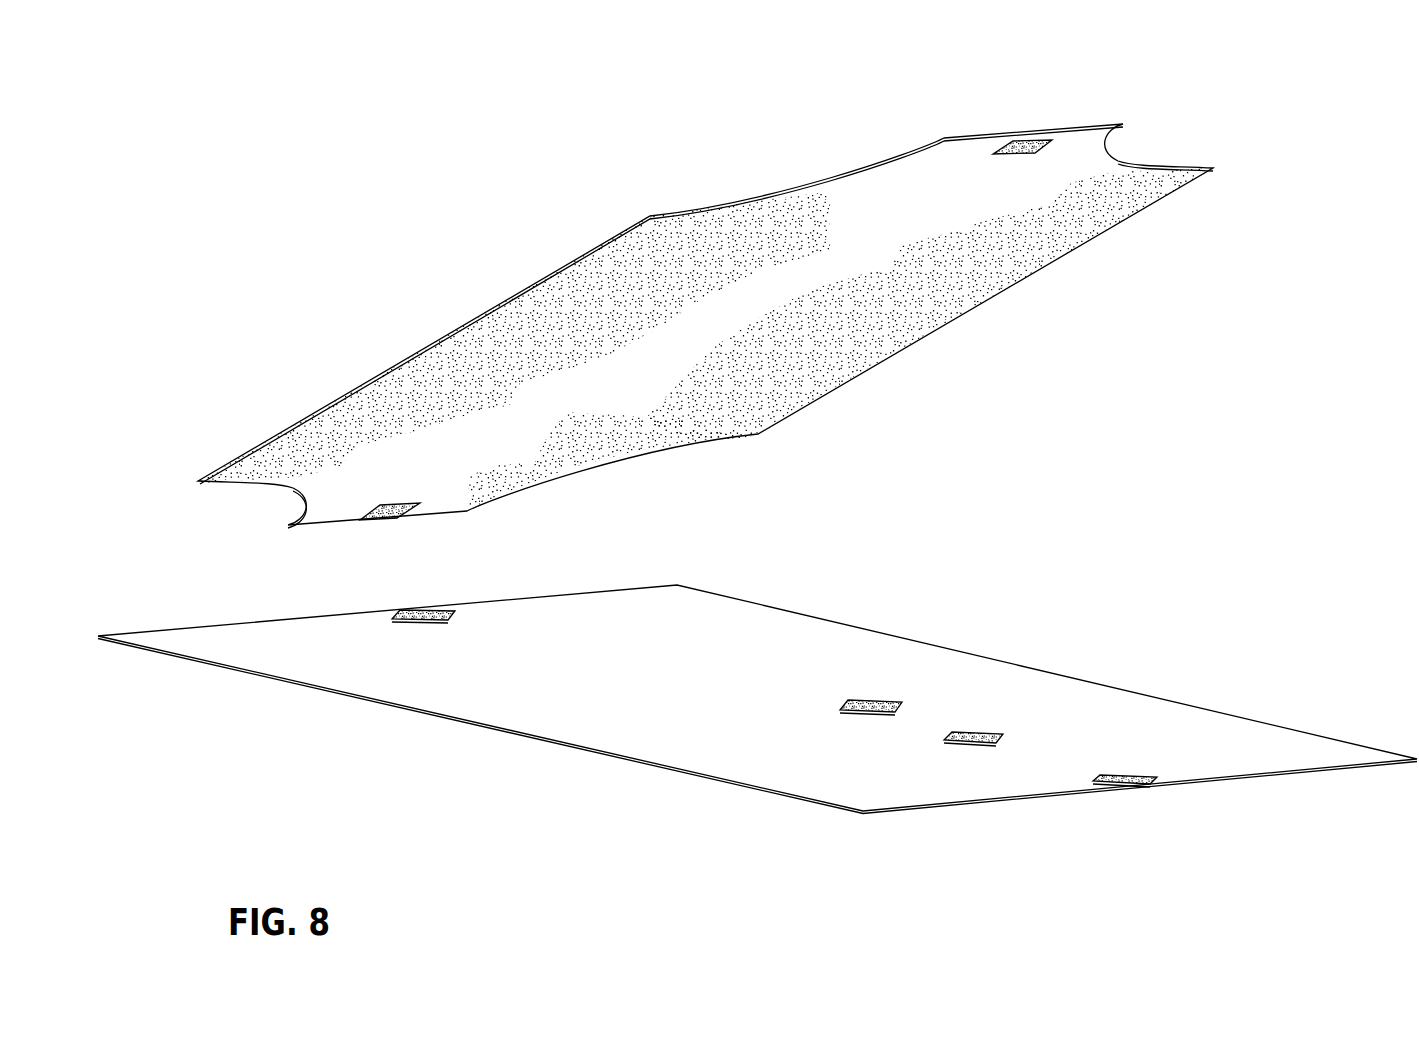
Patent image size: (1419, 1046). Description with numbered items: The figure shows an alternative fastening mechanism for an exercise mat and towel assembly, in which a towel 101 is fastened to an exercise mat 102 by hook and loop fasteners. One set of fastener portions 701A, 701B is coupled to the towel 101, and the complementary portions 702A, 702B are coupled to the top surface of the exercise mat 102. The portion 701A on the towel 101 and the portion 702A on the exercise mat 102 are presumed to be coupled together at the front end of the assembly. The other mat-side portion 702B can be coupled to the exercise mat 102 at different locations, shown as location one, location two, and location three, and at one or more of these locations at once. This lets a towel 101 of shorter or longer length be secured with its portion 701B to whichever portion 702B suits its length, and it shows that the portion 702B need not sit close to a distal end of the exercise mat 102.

The towel 101 is at (867, 212).
The exercise mat 102 is at (1057, 717).
The hook and loop fastener portion on towel 701A is at (383, 517).
The hook and loop fastener portion on towel 701B is at (1033, 144).
The hook and loop fastener portion on exercise mat 702A is at (440, 610).
The hook and loop fastener portion on exercise mat 702B is at (838, 707).